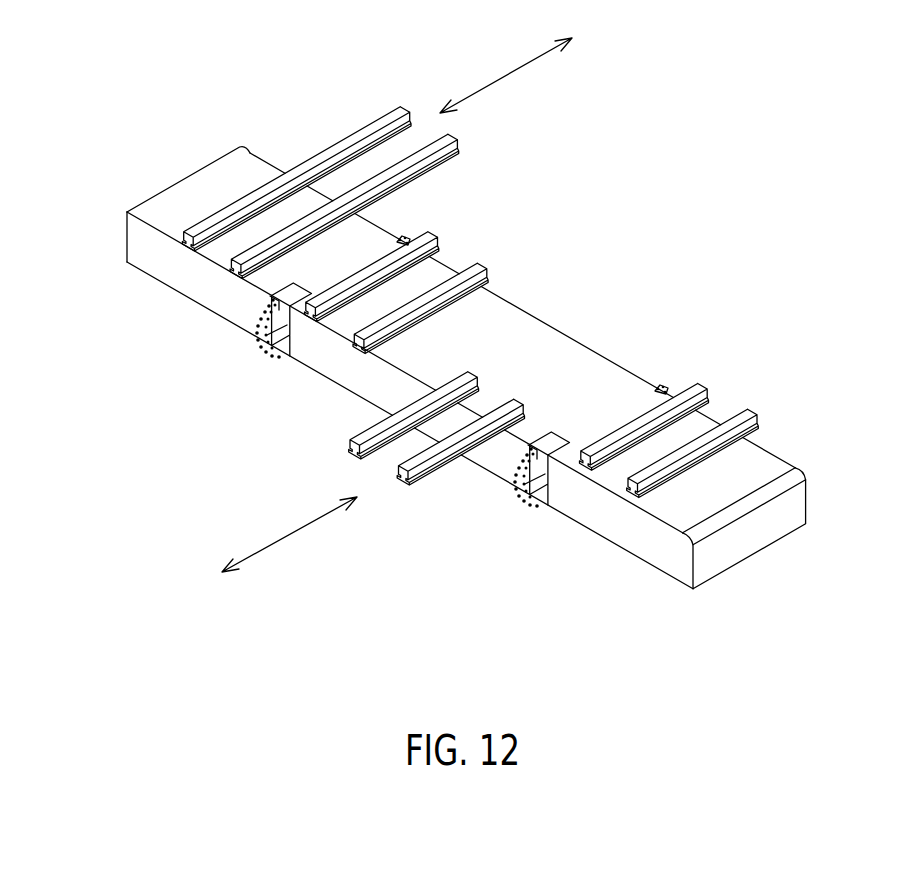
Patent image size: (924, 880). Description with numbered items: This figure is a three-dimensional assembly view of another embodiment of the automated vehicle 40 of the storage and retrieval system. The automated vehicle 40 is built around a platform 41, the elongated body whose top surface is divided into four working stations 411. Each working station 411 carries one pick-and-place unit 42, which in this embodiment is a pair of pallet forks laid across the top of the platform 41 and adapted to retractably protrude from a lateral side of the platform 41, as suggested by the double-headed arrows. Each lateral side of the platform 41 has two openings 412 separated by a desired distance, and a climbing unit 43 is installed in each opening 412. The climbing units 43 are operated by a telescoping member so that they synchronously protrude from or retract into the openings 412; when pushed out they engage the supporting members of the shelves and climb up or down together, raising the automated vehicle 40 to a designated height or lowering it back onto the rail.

The automated vehicle 40 is at (514, 339).
The platform 41 is at (788, 517).
The working station 411 is at (247, 202).
The opening 412 is at (270, 296).
The pick-and-place unit 42 is at (400, 152).
The climbing unit 43 is at (404, 239).